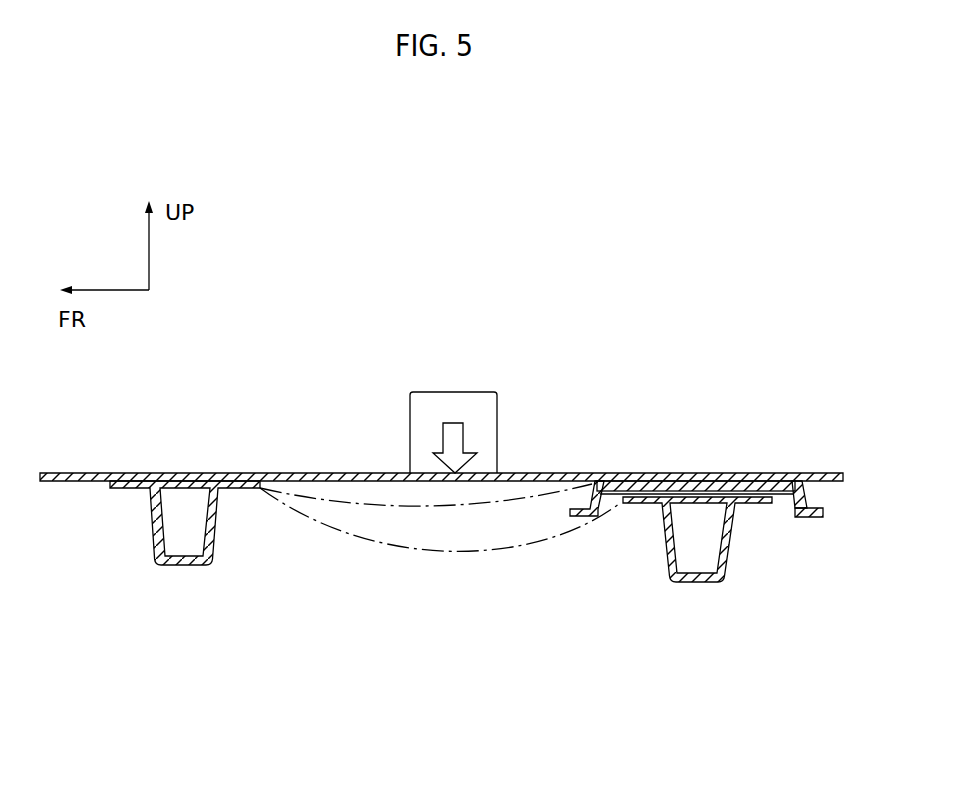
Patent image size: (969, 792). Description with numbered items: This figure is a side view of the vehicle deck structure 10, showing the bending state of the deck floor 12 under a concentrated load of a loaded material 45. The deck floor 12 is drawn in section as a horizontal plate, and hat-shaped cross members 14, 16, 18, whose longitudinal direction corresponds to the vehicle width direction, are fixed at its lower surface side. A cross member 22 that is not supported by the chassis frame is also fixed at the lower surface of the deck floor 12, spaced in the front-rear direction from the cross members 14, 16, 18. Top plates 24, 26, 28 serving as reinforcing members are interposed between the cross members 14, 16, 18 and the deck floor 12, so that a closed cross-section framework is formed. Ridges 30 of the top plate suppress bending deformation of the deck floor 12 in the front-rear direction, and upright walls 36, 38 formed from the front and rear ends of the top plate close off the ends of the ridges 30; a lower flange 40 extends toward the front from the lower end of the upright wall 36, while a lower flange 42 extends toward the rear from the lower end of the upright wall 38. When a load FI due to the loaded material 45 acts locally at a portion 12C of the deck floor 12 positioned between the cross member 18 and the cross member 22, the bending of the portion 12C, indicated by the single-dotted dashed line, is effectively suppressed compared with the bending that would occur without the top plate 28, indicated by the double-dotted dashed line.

The vehicle deck structure 10 is at (593, 399).
The deck floor 12 is at (441, 442).
The portion 12C is at (391, 470).
The cross member 14 is at (697, 595).
The cross member 16 is at (697, 595).
The cross member 18 is at (681, 593).
The cross member 22 is at (185, 576).
The top plate 24 is at (818, 518).
The top plate 26 is at (818, 518).
The top plate 28 is at (818, 518).
The ridges 30 is at (692, 490).
The upright wall 36 is at (594, 486).
The upright wall 38 is at (799, 505).
The lower flange 40 is at (577, 514).
The lower flange 42 is at (836, 506).
The loaded material 45 is at (482, 404).
The load FI is at (455, 435).